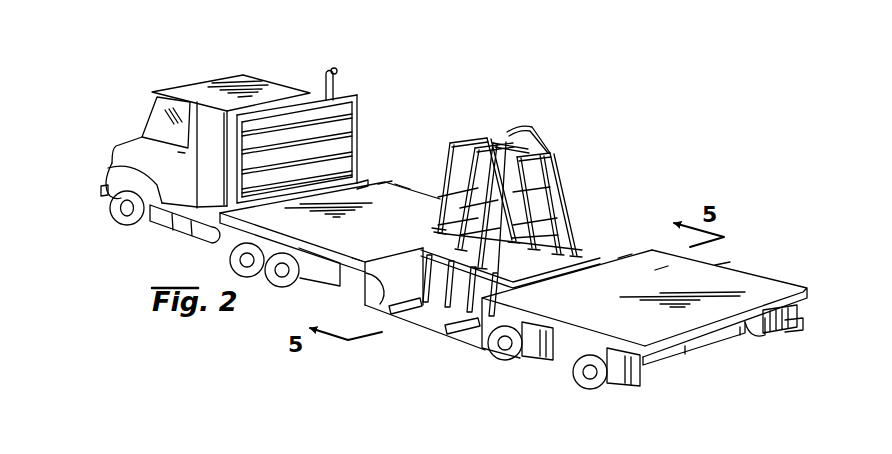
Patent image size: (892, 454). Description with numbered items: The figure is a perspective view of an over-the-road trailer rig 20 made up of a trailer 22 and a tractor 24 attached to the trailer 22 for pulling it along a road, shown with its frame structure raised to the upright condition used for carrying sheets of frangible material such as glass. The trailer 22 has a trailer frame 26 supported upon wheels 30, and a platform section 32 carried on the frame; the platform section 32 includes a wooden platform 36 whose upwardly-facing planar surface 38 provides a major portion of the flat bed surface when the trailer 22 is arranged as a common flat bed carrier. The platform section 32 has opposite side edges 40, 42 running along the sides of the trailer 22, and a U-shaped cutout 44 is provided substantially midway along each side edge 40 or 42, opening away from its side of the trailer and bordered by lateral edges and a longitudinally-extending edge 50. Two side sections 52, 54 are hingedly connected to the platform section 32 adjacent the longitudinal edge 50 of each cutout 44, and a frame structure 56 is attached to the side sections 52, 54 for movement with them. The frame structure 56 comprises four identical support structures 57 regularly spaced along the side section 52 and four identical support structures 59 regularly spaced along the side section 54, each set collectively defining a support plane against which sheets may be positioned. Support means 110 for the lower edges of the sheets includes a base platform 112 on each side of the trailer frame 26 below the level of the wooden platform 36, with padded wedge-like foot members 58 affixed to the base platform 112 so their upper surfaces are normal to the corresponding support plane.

The over-the-road trailer rig 20 is at (143, 110).
The trailer 22 is at (398, 173).
The tractor 24 is at (258, 75).
The trailer frame 26 is at (770, 270).
The wheels 30 is at (505, 363).
The platform section 32 is at (382, 190).
The wooden platform 36 is at (680, 320).
The upwardly-facing planar surface 38 is at (660, 268).
The side edge 40 is at (358, 272).
The side edge 42 is at (403, 182).
The U-shaped cutout 44 is at (625, 222).
The longitudinally-extending edge 50 is at (507, 281).
The side section 52 is at (553, 274).
The side section 54 is at (597, 258).
The frame structure 56 is at (570, 193).
The support structures 57 is at (437, 229).
The padded wedge-like foot members 58 is at (387, 323).
The support structures 59 is at (527, 134).
The support means 110 is at (455, 355).
The base platform 112 is at (418, 332).